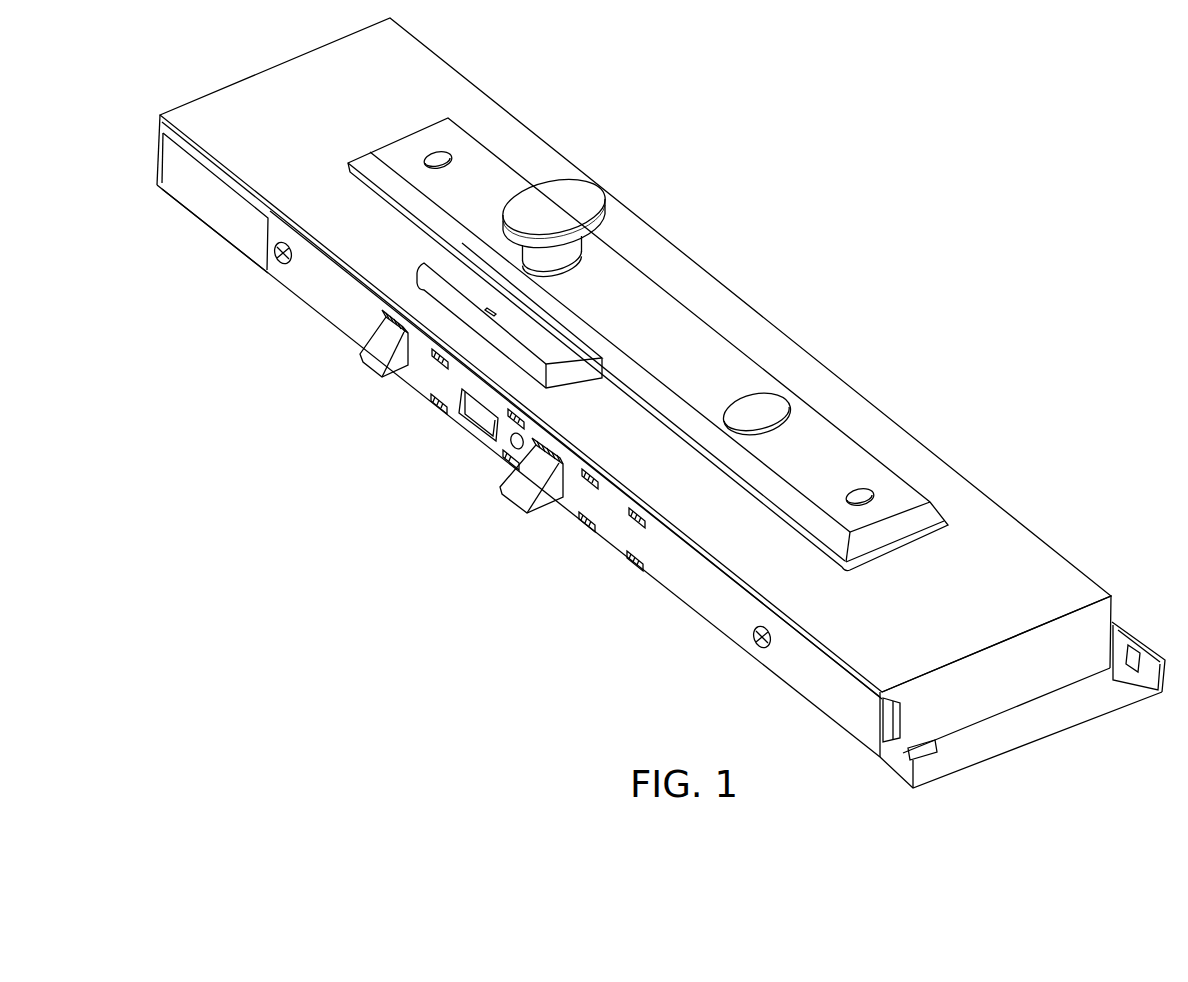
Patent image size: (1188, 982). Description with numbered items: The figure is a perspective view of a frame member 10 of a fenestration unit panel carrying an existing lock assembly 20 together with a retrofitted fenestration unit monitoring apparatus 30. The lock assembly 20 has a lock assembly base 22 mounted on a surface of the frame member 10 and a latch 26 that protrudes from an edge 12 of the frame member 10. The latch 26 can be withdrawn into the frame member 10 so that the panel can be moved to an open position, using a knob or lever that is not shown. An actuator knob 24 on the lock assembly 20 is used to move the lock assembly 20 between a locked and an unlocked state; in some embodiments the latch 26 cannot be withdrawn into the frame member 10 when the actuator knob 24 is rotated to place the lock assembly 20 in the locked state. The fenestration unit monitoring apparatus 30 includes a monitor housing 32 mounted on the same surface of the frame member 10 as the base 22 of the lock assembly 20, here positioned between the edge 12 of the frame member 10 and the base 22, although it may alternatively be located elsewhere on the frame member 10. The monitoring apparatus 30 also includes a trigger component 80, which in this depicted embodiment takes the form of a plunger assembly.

The frame member 10 is at (1020, 565).
The edge 12 is at (677, 573).
The lock assembly 20 is at (622, 320).
The lock assembly base 22 is at (675, 330).
The actuator knob 24 is at (570, 193).
The latch 26 is at (543, 493).
The fenestration unit monitoring apparatus 30 is at (449, 229).
The monitor housing 32 is at (450, 270).
The trigger component 80 is at (362, 377).